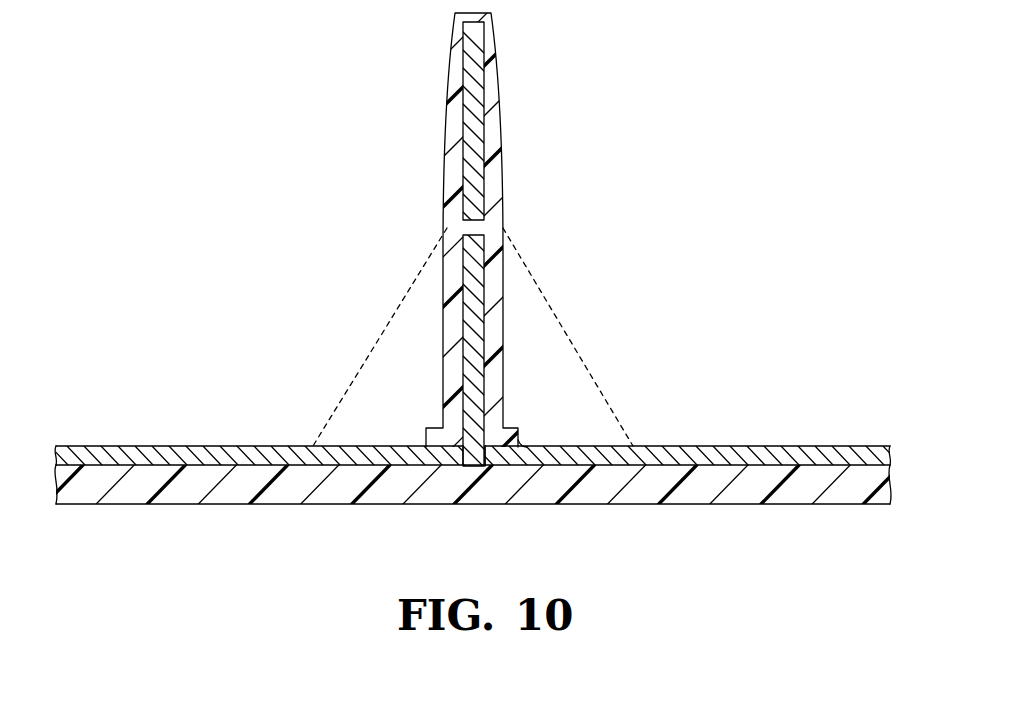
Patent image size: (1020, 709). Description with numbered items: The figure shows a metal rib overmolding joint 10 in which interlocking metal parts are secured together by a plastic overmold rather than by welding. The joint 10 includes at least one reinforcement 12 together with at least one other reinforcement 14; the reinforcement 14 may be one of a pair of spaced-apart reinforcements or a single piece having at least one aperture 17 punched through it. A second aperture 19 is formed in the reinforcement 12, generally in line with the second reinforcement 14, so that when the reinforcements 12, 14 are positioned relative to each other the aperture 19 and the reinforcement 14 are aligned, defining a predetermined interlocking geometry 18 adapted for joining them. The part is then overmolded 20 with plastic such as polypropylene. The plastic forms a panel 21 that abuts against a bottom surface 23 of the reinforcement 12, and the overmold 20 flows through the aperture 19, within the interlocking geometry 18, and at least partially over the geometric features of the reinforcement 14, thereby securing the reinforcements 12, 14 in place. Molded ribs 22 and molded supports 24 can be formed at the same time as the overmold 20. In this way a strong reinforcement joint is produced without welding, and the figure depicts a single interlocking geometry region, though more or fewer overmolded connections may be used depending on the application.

The metal rib overmolding joint 10 is at (661, 241).
The reinforcement 12 is at (740, 455).
The reinforcement 14 is at (472, 295).
The aperture 17 is at (447, 225).
The interlocking geometry 18 is at (459, 480).
The second aperture 19 is at (479, 468).
The overmold 20 is at (447, 138).
The panel 21 is at (185, 490).
The molded ribs 22 is at (357, 360).
The bottom surface 23 is at (107, 470).
The molded supports 24 is at (520, 433).